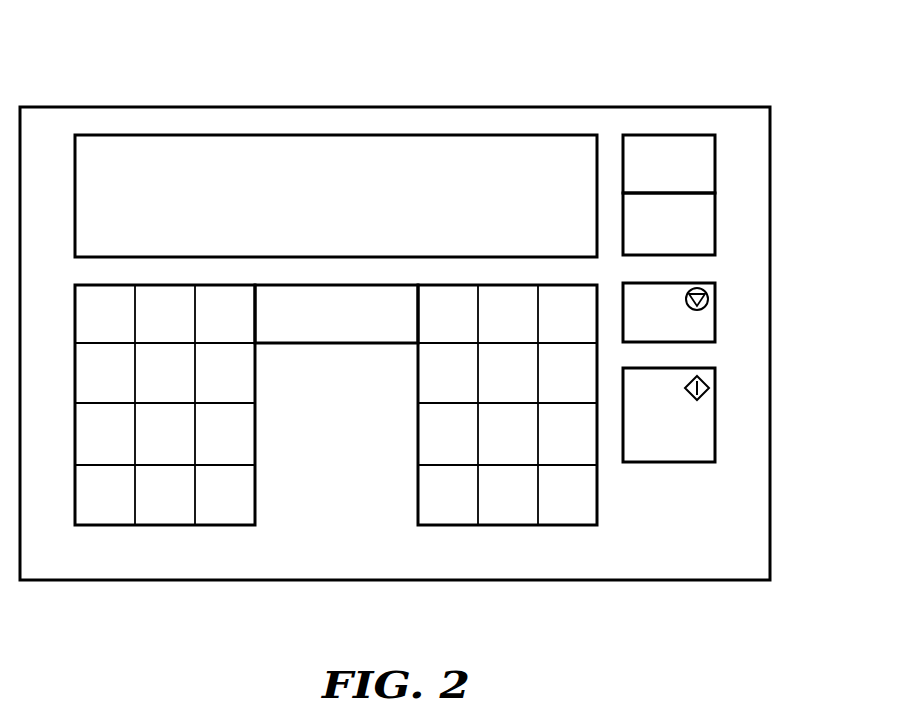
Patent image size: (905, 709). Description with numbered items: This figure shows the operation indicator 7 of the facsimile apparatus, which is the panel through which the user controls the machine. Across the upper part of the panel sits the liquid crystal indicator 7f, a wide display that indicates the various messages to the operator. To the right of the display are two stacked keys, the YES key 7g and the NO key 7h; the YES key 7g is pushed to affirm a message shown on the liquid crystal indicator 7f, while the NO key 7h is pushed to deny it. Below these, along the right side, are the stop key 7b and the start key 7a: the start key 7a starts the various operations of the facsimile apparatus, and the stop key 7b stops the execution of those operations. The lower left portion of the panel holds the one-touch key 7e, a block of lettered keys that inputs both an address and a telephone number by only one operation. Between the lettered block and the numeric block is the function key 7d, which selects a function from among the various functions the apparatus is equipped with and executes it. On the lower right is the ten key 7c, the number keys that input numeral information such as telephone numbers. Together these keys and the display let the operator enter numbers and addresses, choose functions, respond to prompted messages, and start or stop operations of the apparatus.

The operation indicator 7 is at (673, 104).
The start key 7a is at (710, 428).
The stop key 7b is at (710, 323).
The ten key 7c is at (607, 516).
The function key 7d is at (340, 344).
The one-touch key 7e is at (264, 447).
The liquid crystal indicator 7f is at (435, 137).
The YES key 7g is at (716, 161).
The NO key 7h is at (716, 228).